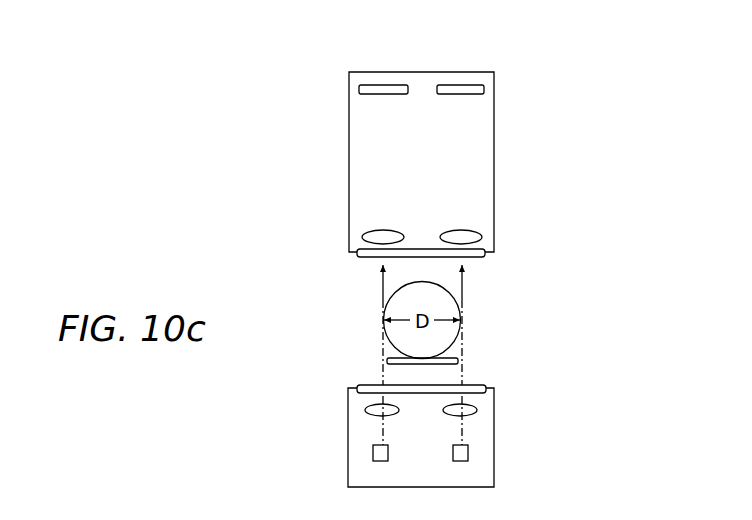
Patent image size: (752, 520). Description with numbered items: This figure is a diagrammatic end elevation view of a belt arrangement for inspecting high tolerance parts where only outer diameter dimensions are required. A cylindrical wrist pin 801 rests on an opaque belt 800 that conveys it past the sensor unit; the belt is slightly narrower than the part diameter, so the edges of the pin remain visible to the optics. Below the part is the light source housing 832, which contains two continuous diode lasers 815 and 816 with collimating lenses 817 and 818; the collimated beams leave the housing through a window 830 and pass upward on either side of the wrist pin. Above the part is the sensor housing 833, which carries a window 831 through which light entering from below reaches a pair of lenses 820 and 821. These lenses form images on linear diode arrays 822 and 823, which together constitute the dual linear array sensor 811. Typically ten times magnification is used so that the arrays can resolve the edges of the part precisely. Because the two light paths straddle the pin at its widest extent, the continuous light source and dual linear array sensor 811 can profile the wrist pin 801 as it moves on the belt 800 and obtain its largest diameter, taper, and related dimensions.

The opaque belt 800 is at (458, 362).
The cylindrical wrist pin 801 is at (460, 305).
The dual linear array sensor 811 is at (423, 80).
The continuous diode laser 815 is at (373, 452).
The continuous diode laser 816 is at (468, 455).
The collimating lens 817 is at (370, 408).
The collimating lens 818 is at (478, 410).
The imaging lens 820 is at (388, 231).
The imaging lens 821 is at (470, 231).
The linear diode array 822 is at (384, 94).
The linear diode array 823 is at (477, 94).
The window 830 is at (486, 389).
The window 831 is at (486, 256).
The light source housing 832 is at (348, 425).
The sensor housing 833 is at (349, 167).